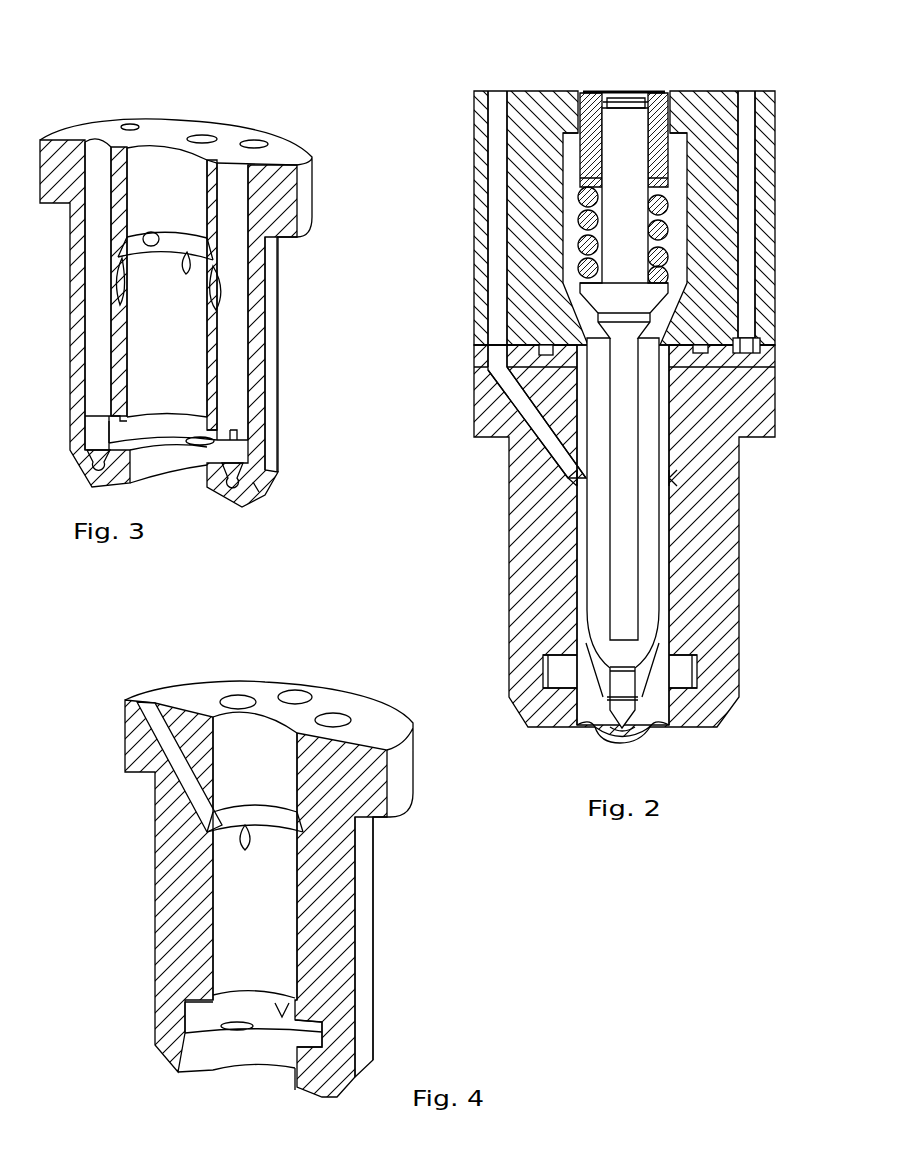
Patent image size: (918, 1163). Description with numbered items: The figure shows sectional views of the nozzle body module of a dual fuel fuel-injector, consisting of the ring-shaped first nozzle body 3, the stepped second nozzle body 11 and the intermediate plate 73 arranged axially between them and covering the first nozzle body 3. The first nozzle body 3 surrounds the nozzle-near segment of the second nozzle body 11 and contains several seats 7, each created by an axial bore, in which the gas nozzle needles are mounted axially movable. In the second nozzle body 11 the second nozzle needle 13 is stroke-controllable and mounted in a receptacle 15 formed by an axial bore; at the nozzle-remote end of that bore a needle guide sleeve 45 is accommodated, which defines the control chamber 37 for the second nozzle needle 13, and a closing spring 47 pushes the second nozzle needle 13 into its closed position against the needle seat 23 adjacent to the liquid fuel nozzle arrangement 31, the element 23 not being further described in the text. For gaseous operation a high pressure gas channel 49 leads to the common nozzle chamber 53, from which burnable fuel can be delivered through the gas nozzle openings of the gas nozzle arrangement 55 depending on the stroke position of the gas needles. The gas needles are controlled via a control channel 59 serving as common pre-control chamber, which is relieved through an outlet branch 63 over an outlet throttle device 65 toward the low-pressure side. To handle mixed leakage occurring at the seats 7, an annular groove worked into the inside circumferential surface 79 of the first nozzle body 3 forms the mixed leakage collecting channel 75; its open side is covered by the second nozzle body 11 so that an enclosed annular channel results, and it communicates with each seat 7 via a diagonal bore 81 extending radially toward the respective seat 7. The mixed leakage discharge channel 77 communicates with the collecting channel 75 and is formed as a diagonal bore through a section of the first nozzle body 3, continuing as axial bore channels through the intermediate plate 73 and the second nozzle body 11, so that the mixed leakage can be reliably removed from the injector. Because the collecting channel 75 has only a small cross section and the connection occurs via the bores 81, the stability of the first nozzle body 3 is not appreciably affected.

In FIG. 2, the first nozzle body 3 is at (520, 583).
In FIG. 3, the first nozzle body 3 is at (290, 155).
In FIG. 4, the first nozzle body 3 is at (395, 720).
In FIG. 3, the seat 7 is at (100, 170).
In FIG. 4, the seat 7 is at (239, 696).
In FIG. 2, the second nozzle body 11 is at (712, 101).
In FIG. 2, the second nozzle needle 13 is at (617, 120).
In FIG. 2, the receptacle 15 is at (567, 103).
In FIG. 2, the valve seat 23 is at (597, 683).
In FIG. 2, the liquid fuel nozzle arrangement 31 is at (645, 725).
In FIG. 2, the control chamber 37 is at (642, 92).
In FIG. 2, the needle guide sleeve 45 is at (590, 167).
In FIG. 2, the closing spring 47 is at (665, 252).
In FIG. 3, the high pressure gas channel 49 is at (255, 143).
In FIG. 4, the high pressure gas channel 49 is at (293, 694).
In FIG. 2, the nozzle chamber 53 is at (545, 662).
In FIG. 3, the nozzle chamber 53 is at (155, 427).
In FIG. 4, the nozzle chamber 53 is at (270, 1015).
In FIG. 3, the gas nozzle arrangement 55 is at (81, 471).
In FIG. 2, the control channel 59 is at (546, 345).
In FIG. 2, the outlet branch 63 is at (747, 307).
In FIG. 2, the outlet throttle device 65 is at (760, 348).
In FIG. 2, the intermediate plate 73 is at (474, 355).
In FIG. 2, the mixed leakage collecting channel 75 is at (568, 478).
In FIG. 3, the mixed leakage collecting channel 75 is at (185, 238).
In FIG. 4, the mixed leakage collecting channel 75 is at (268, 827).
In FIG. 2, the mixed leakage discharge channel 77 is at (498, 105).
In FIG. 3, the mixed leakage discharge channel 77 is at (135, 122).
In FIG. 4, the mixed leakage discharge channel 77 is at (150, 708).
In FIG. 2, the inside circumferential surface 79 is at (582, 560).
In FIG. 3, the inside circumferential surface 79 is at (132, 375).
In FIG. 4, the inside circumferential surface 79 is at (213, 935).
In FIG. 3, the bore 81 is at (215, 285).
In FIG. 4, the bore 81 is at (243, 830).